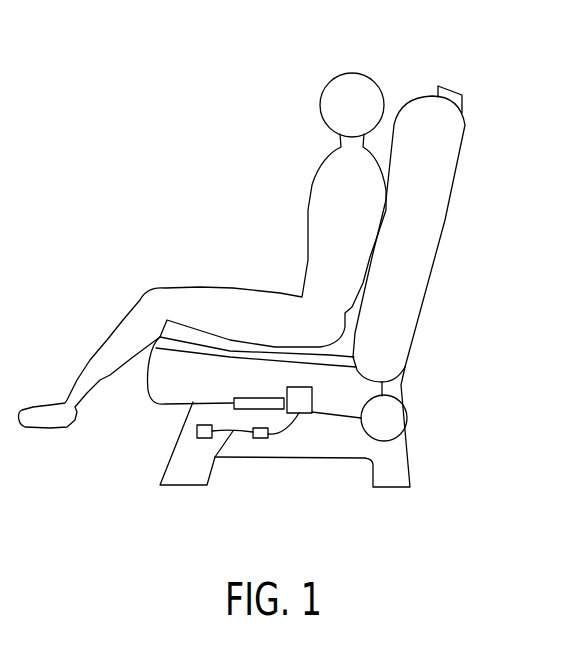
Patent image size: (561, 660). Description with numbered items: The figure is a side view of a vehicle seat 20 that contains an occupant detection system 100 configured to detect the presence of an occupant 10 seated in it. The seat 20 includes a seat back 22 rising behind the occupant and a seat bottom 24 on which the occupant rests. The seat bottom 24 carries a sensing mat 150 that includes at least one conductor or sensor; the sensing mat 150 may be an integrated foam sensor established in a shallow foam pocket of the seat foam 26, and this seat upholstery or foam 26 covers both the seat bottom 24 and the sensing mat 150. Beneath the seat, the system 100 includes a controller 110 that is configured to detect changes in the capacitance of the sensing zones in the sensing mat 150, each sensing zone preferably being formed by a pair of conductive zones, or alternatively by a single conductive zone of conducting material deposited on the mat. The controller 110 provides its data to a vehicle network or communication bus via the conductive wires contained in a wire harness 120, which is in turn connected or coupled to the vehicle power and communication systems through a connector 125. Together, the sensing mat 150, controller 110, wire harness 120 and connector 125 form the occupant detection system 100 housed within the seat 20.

The occupant 10 is at (357, 73).
The vehicle seat 20 is at (478, 287).
The seat back 22 is at (443, 190).
The seat bottom 24 is at (157, 386).
The seat upholstery or foam 26 is at (328, 368).
The occupant detection system 100 is at (322, 450).
The controller 110 is at (300, 414).
The wire harness 120 is at (219, 460).
The connector 125 is at (198, 437).
The sensing mat 150 is at (258, 398).